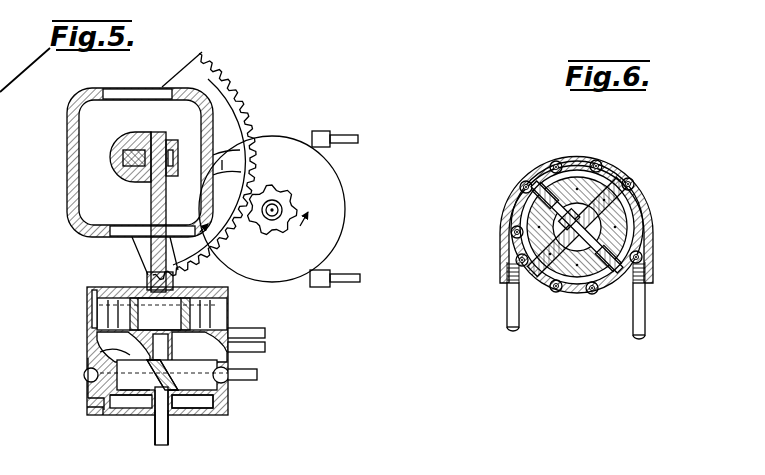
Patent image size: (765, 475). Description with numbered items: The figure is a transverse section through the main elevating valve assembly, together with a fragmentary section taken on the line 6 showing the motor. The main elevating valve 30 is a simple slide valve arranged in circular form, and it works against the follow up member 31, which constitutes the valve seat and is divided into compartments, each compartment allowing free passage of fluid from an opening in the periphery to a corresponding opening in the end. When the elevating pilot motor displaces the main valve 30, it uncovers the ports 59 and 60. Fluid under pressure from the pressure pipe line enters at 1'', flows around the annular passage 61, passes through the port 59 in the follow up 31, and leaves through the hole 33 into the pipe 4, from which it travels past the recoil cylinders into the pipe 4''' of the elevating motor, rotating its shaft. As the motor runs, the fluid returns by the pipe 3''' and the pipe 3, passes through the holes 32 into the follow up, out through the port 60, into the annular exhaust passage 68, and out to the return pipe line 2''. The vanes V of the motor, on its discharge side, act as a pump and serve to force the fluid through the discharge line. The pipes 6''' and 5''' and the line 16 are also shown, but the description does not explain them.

In FIG. 5, the holes 32 is at (124, 292).
In FIG. 5, the section line 6— 6 is at (153, 303).
In FIG. 5, the annular exhaust passage 68 is at (105, 357).
In FIG. 5, the section line / inlet passage 16 is at (66, 358).
In FIG. 5, the annular passage 61 is at (95, 385).
In FIG. 5, the main elevating valve 30 is at (104, 410).
In FIG. 5, the follow up member 31 is at (136, 412).
In FIG. 5, the port 59 is at (127, 400).
In FIG. 5, the pipe 4 is at (156, 433).
In FIG. 5, the hole 33 is at (177, 410).
In FIG. 5, the port 60 is at (196, 406).
In FIG. 5, the pipe 3 is at (258, 326).
In FIG. 5, the return pipe line 2'' is at (257, 342).
In FIG. 5, the inlet of pipe line 1 1'' is at (260, 366).
In FIG. 5, the inlet pipe 6''' is at (358, 133).
In FIG. 5, the outlet pipe 5''' is at (356, 272).
In FIG. 6, the vanes V is at (520, 234).
In FIG. 6, the pipe 3''' is at (526, 305).
In FIG. 6, the pipe 4''' is at (656, 310).